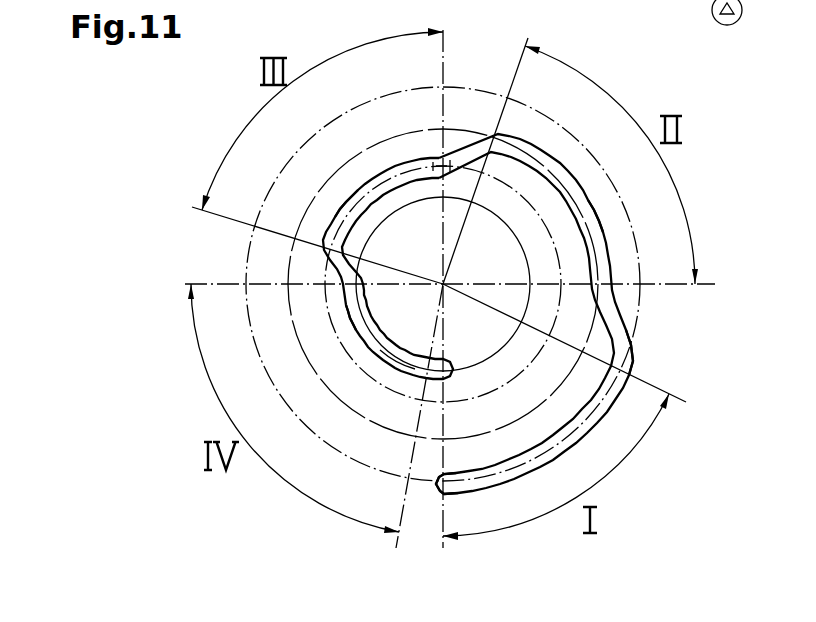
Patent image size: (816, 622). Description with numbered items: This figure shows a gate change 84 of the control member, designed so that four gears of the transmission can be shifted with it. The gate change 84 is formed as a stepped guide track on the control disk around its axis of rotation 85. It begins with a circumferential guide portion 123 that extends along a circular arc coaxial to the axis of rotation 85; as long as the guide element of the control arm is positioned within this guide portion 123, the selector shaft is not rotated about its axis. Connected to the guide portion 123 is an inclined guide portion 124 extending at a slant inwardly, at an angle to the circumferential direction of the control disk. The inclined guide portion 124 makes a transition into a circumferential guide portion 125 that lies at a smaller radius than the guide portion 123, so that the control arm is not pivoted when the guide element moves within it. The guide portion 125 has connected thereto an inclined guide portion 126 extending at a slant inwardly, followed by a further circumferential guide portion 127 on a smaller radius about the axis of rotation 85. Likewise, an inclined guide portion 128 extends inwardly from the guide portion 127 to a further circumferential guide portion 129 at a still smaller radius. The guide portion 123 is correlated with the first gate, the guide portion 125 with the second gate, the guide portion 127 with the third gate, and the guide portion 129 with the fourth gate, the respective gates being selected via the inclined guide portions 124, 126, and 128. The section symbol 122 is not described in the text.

The gate change 84 is at (544, 148).
The axis of rotation 85 is at (441, 285).
The section indicator 122 is at (742, 6).
The circumferential guide portion 123 is at (458, 492).
The inclined guide portion 124 is at (637, 353).
The circumferential guide portion 125 is at (592, 229).
The inclined guide portion 126 is at (469, 148).
The circumferential guide portion 127 is at (348, 207).
The inclined guide portion 128 is at (443, 284).
The circumferential guide portion 129 is at (398, 362).